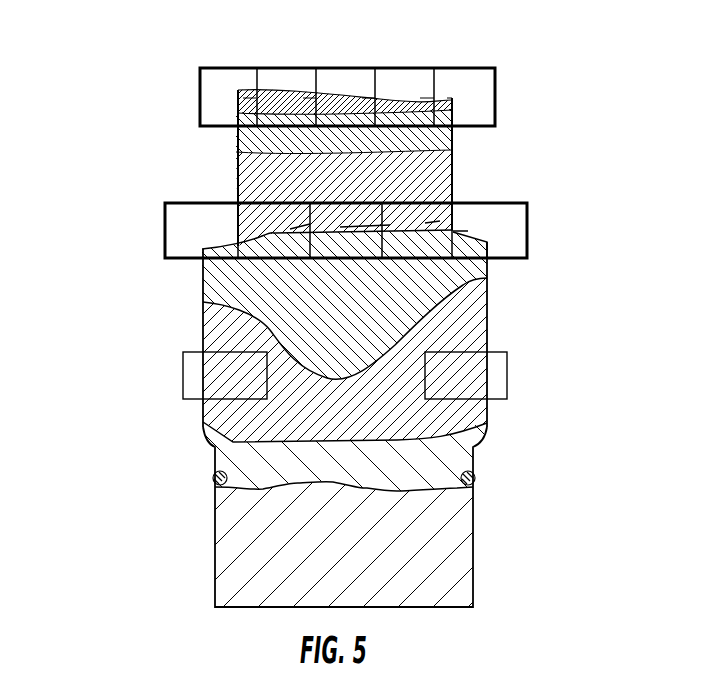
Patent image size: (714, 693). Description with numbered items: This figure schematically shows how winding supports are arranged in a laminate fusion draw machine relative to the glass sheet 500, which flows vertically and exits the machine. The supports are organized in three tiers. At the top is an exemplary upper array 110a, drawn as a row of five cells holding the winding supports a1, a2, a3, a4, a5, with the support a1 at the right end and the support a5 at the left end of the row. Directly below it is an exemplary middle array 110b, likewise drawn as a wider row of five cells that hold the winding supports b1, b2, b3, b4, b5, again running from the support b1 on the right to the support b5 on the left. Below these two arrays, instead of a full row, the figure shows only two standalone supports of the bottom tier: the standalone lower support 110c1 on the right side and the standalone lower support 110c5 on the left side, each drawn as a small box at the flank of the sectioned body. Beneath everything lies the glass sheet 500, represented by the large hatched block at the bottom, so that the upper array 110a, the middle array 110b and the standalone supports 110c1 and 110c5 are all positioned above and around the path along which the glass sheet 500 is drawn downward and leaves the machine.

The upper array of winding supports 110a is at (498, 63).
The middle array of winding supports 110b is at (530, 198).
The standalone lower winding support 110c5 is at (197, 376).
The standalone lower winding support 110c1 is at (493, 378).
The glass sheet 500 is at (445, 523).
The winding support of upper array a1 is at (464, 97).
The winding support of upper array a2 is at (404, 97).
The winding support of upper array a3 is at (345, 97).
The winding support of upper array a4 is at (286, 97).
The winding support of upper array a5 is at (228, 97).
The winding support of middle array b1 is at (489, 230).
The winding support of middle array b2 is at (417, 230).
The winding support of middle array b3 is at (346, 230).
The winding support of middle array b4 is at (274, 230).
The winding support of middle array b5 is at (201, 230).